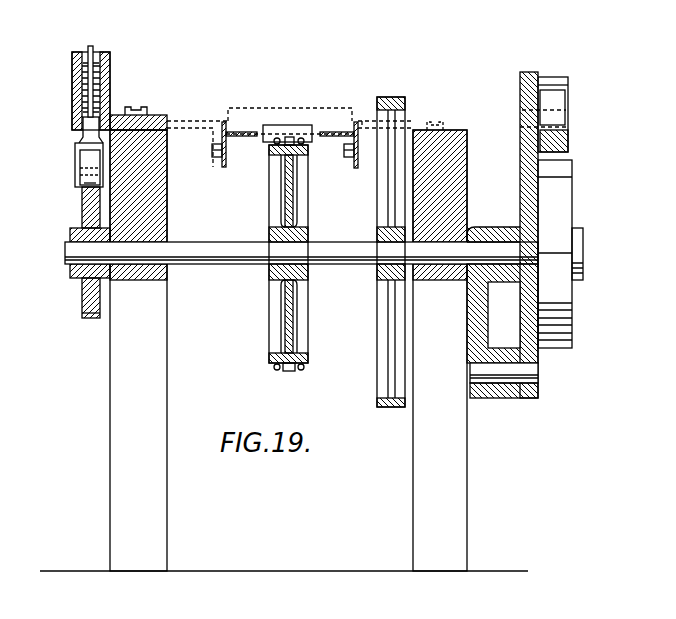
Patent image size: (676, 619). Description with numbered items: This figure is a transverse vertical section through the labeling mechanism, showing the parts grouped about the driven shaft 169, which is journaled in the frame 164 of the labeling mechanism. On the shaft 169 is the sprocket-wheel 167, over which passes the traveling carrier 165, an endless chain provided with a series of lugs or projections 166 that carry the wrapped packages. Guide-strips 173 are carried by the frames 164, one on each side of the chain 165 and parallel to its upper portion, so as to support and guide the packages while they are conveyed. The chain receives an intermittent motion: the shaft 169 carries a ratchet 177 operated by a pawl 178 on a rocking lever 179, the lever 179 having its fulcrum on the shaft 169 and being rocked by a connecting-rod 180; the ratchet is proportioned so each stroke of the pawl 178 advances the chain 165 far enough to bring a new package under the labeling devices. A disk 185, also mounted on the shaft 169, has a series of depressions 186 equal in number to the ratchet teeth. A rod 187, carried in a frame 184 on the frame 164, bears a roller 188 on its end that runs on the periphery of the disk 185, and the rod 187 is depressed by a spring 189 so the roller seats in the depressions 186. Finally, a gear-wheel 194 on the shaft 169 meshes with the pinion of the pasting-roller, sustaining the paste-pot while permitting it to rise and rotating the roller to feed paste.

The frame of the labeling mechanism 164 is at (462, 112).
The traveling carrier 165 is at (270, 158).
The lugs or projections 166 is at (289, 128).
The sprocket-wheel 167 is at (285, 187).
The shaft 169 is at (336, 250).
The guide-strips 173 is at (233, 130).
The ratchet 177 is at (565, 194).
The pawl 178 is at (568, 142).
The rocking lever 179 is at (520, 165).
The connecting-rod 180 is at (508, 398).
The frame 184 is at (110, 91).
The disk 185 is at (82, 212).
The depressions 186 is at (90, 318).
The rod 187 is at (89, 46).
The roller 188 is at (80, 168).
The spring 189 is at (72, 85).
The gear-wheel 194 is at (396, 108).